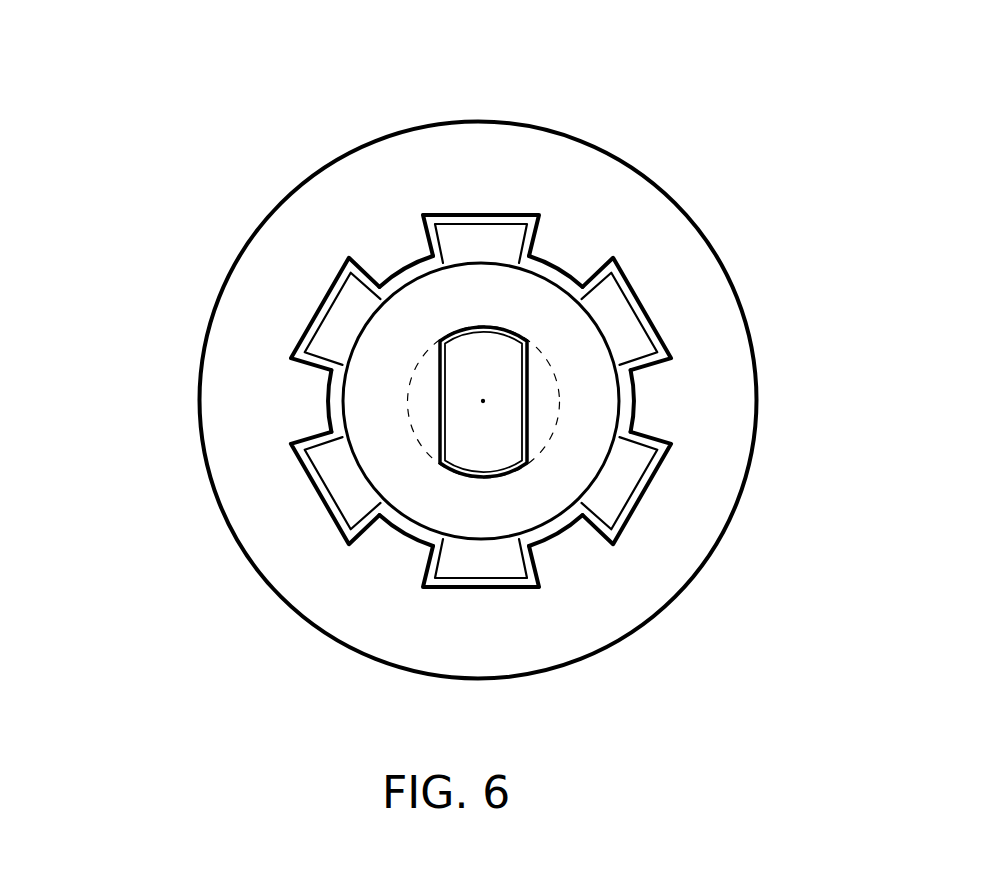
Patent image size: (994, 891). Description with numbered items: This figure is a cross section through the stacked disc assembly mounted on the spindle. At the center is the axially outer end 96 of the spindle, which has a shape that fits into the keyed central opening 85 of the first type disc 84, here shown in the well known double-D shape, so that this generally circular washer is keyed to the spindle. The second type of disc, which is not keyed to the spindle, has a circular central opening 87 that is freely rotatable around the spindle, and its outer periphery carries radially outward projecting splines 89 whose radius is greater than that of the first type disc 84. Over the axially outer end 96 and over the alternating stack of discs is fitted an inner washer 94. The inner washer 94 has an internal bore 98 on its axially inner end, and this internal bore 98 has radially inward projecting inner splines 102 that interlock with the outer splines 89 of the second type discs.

The first type disc 84 is at (570, 342).
The central opening 85 is at (530, 387).
The central opening 87 is at (563, 410).
The splines 89 is at (622, 470).
The inner washer 94 is at (485, 170).
The axially outer end 96 is at (485, 368).
The internal bore 98 is at (394, 277).
The inner splines 102 is at (307, 398).